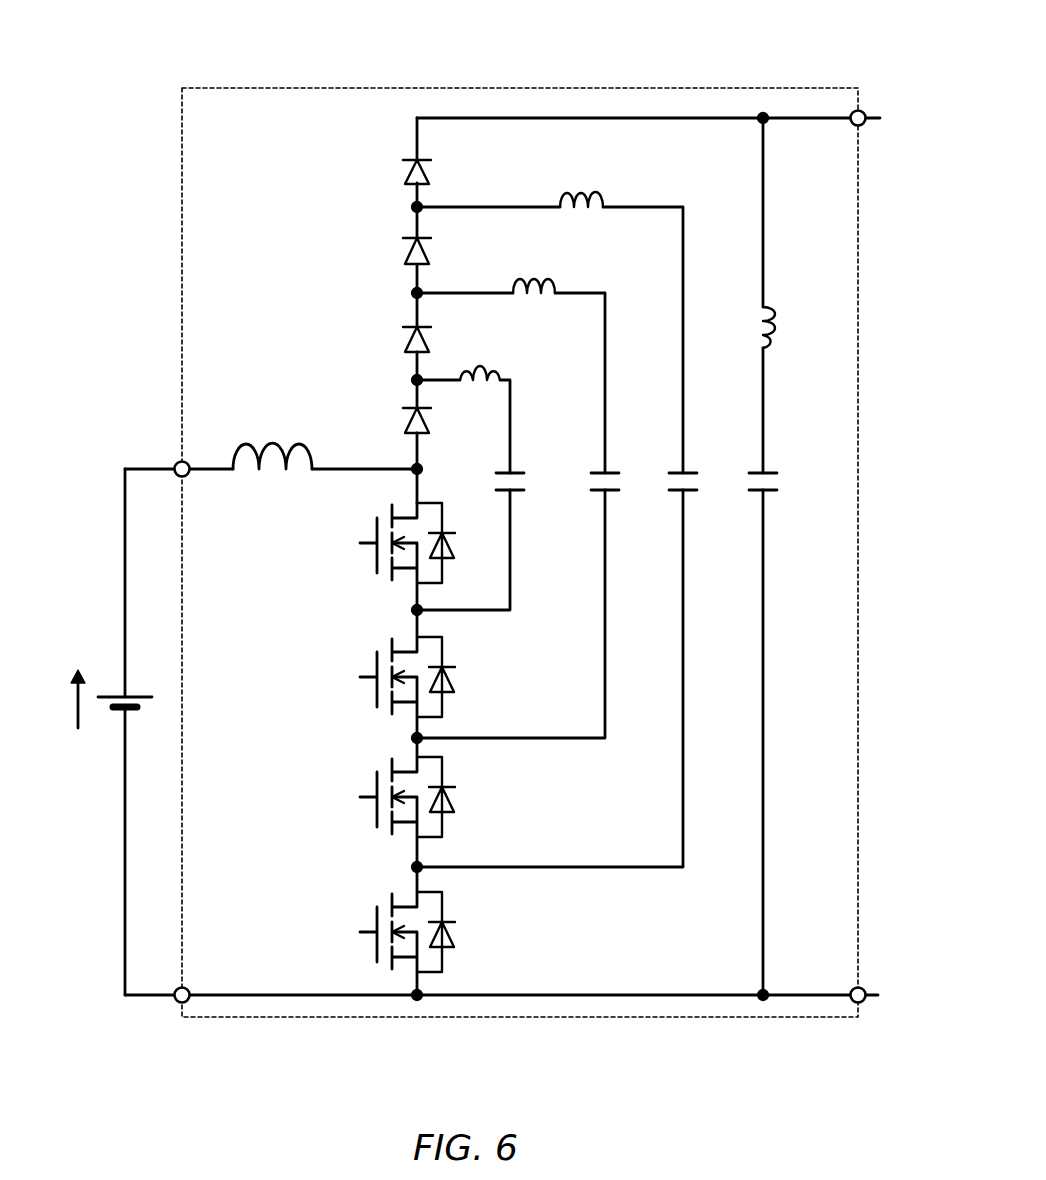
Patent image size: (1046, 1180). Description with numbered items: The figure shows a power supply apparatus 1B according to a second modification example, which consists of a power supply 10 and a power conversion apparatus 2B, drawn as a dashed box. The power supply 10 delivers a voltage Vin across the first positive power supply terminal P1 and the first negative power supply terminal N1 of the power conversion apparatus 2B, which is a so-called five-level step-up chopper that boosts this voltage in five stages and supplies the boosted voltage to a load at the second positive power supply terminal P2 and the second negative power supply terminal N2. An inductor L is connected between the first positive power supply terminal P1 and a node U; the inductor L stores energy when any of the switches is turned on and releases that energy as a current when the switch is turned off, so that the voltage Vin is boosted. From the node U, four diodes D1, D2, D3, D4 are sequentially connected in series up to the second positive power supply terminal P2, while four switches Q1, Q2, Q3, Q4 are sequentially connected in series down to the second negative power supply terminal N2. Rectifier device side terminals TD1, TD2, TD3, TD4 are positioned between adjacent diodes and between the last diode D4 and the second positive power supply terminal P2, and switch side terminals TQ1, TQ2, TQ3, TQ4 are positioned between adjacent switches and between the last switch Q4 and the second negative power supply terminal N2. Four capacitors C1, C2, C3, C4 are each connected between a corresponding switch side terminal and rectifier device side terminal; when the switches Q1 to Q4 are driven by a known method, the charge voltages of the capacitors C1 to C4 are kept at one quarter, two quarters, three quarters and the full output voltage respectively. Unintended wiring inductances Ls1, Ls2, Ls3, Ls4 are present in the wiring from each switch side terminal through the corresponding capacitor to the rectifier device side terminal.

The power supply apparatus 1B is at (162, 51).
The power conversion apparatus 2B is at (666, 88).
The power supply 10 is at (106, 694).
The inductor L is at (243, 448).
The diode D1 is at (400, 444).
The diode D2 is at (400, 350).
The diode D3 is at (400, 264).
The diode D4 is at (410, 165).
The switch Q1 is at (360, 544).
The switch Q2 is at (360, 676).
The switch Q3 is at (360, 798).
The switch Q4 is at (360, 928).
The capacitor C1 is at (515, 471).
The capacitor C2 is at (610, 471).
The capacitor C3 is at (687, 471).
The capacitor C4 is at (767, 471).
The wiring inductance Ls1 is at (494, 378).
The wiring inductance Ls2 is at (549, 292).
The wiring inductance Ls3 is at (594, 210).
The wiring inductance Ls4 is at (750, 315).
The rectifier device side terminal TD1 is at (400, 383).
The rectifier device side terminal TD2 is at (400, 296).
The rectifier device side terminal TD3 is at (400, 210).
The rectifier device side terminal TD4 is at (760, 125).
The switch side terminal TQ1 is at (404, 613).
The switch side terminal TQ2 is at (404, 742).
The switch side terminal TQ3 is at (404, 870).
The switch side terminal TQ4 is at (760, 992).
The first positive power supply terminal P1 is at (159, 453).
The second positive power supply terminal P2 is at (883, 103).
The first negative power supply terminal N1 is at (161, 1015).
The second negative power supply terminal N2 is at (886, 1015).
The node U is at (433, 480).
The voltage Vin is at (43, 699).